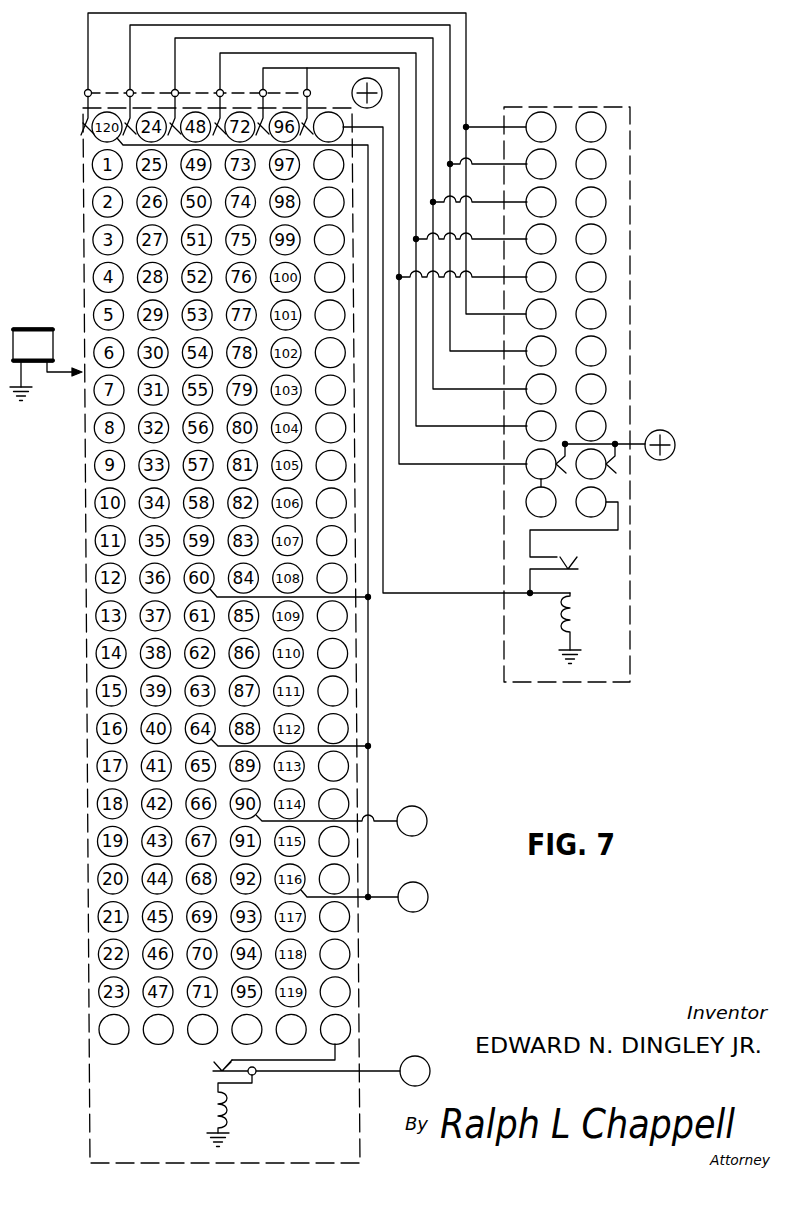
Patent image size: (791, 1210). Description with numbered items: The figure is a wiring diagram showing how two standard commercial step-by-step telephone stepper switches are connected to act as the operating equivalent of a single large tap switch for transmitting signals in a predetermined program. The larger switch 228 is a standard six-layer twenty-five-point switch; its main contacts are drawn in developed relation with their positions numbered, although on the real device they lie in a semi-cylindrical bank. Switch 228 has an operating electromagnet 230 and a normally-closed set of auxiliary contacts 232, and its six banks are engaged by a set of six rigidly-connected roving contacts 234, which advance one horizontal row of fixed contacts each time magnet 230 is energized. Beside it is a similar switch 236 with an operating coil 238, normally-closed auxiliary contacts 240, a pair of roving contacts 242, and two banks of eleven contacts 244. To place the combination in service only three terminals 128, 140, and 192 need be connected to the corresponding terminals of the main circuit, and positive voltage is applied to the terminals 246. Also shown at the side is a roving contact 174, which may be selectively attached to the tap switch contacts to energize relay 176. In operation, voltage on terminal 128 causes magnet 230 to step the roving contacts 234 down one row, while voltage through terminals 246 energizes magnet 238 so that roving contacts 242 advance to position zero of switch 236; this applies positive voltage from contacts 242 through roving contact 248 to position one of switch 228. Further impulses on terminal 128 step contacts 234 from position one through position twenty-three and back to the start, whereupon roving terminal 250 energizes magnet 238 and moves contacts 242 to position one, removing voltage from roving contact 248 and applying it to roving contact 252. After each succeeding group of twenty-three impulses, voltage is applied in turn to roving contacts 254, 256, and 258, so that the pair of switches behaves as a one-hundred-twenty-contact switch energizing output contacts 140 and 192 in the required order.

The terminal 128 is at (332, 1065).
The output contact 140 is at (365, 897).
The roving contact 174 is at (50, 378).
The relay 176 is at (40, 317).
The output contact 192 is at (342, 821).
The switch 228 is at (83, 607).
The operating electromagnet 230 is at (213, 1113).
The auxiliary contacts 232 is at (211, 1066).
The roving contacts 234 is at (105, 94).
The switch 236 is at (632, 365).
The operating coil 238 is at (562, 617).
The auxiliary contacts 240 is at (575, 554).
The roving contacts 242 is at (617, 452).
The contacts 244 is at (686, 299).
The terminals 246 is at (386, 110).
The roving contact 248 is at (89, 91).
The roving terminal 250 is at (308, 94).
The roving contact 252 is at (131, 91).
The roving contact 254 is at (176, 91).
The roving contact 256 is at (221, 91).
The roving contact 258 is at (264, 93).